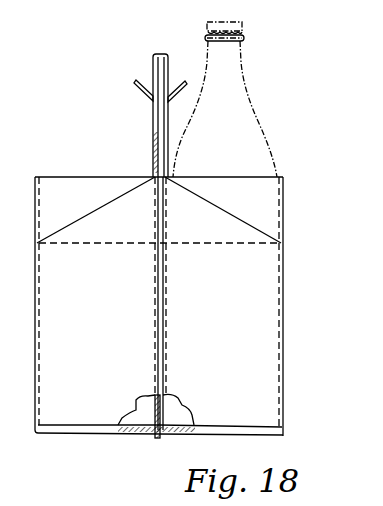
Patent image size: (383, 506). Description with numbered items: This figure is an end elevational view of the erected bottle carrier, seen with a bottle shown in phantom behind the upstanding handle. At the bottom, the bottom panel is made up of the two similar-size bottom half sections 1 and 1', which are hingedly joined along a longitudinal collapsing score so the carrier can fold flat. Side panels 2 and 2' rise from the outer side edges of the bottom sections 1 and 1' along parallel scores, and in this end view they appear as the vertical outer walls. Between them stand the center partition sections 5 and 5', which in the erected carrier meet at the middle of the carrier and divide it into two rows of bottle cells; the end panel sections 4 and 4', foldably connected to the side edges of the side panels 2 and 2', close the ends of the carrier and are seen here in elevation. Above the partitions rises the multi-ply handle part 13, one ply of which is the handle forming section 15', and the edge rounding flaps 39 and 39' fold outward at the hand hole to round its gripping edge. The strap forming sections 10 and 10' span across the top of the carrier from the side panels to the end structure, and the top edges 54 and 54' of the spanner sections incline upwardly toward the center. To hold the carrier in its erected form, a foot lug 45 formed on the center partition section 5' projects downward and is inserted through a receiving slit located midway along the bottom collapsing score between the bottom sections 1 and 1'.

The bottom half section 1 is at (221, 442).
The bottom half section 1' is at (97, 445).
The side panel 2 is at (294, 306).
The side panel 2' is at (19, 303).
The end panel section 4 is at (222, 334).
The end panel section 4' is at (97, 334).
The center partition section 5 is at (182, 303).
The center partition section 5' is at (137, 303).
The strap forming section 10 is at (242, 210).
The strap forming section 10' is at (94, 196).
The multi-ply handle part 13 is at (152, 62).
The handle forming section 15' is at (131, 142).
The edge rounding flap 39 is at (195, 97).
The edge rounding flap 39' is at (120, 92).
The foot lug 45 is at (157, 432).
The top edge of spanner section 54 is at (242, 210).
The top edge of spanner section 54' is at (79, 218).